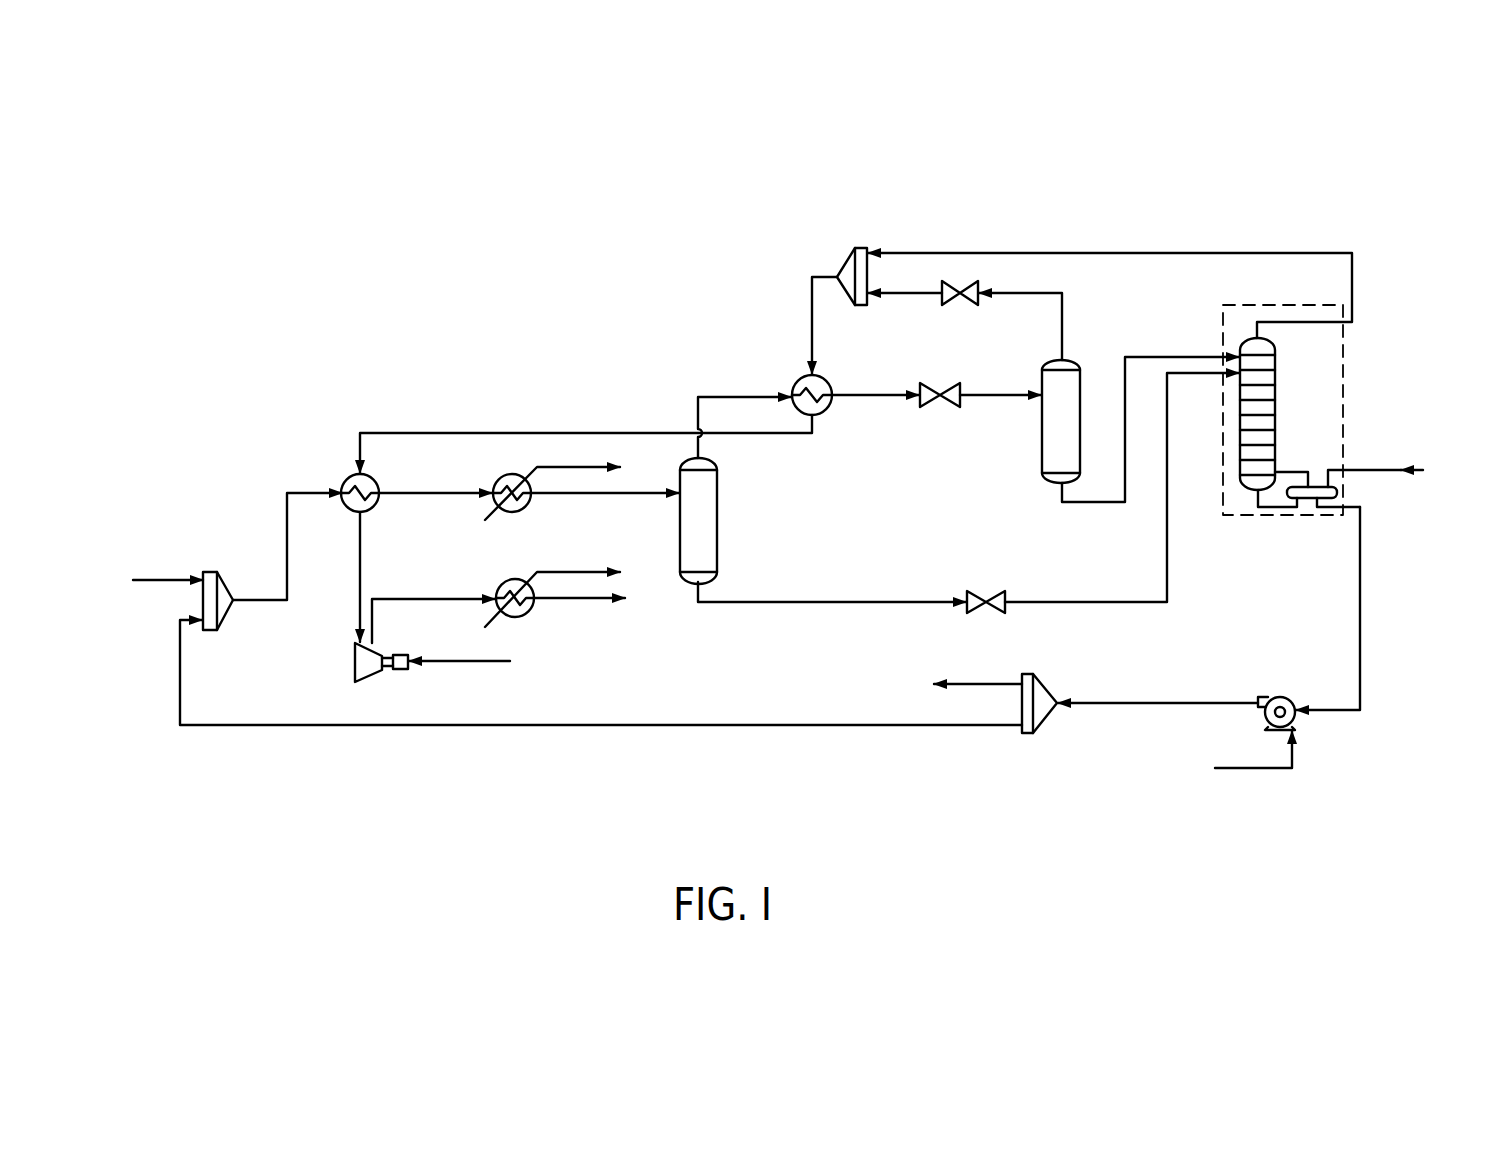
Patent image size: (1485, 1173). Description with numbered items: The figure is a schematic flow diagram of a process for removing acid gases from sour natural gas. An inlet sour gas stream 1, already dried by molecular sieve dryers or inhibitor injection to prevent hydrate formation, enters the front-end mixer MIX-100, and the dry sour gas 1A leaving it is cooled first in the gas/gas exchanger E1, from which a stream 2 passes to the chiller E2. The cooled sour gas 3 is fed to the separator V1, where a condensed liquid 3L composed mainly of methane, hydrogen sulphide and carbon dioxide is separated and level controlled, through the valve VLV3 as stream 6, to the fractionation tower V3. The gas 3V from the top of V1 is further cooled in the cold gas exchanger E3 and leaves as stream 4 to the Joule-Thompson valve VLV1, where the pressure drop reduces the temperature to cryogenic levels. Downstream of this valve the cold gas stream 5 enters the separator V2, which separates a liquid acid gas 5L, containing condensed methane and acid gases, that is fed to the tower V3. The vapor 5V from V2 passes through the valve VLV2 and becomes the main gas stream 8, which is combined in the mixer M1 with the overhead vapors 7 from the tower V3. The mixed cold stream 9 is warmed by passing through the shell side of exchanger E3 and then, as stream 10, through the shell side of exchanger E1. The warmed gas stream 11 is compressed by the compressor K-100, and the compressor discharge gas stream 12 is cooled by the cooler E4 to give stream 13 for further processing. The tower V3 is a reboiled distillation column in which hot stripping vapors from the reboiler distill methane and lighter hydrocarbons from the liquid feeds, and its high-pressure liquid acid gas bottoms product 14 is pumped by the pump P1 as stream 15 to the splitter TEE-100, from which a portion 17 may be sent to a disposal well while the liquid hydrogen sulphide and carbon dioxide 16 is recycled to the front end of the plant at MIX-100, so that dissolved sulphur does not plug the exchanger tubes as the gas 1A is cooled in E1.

The inlet sour gas stream 1 is at (163, 578).
The dry sour gas stream 1A is at (289, 570).
The stream from E1 to E2 2 is at (446, 495).
The cooled sour gas 3 is at (598, 498).
The gas from top of separator V1 3V is at (724, 399).
The condensed liquid 3L is at (860, 605).
The stream from E3 to valve VLV1 4 is at (886, 398).
The cold gas stream 5 is at (1014, 398).
The vapor stream from V2 5V is at (1038, 296).
The liquid acid gas 5L is at (1124, 446).
The liquid stream from VLV3 to column V3 6 is at (1170, 538).
The overhead vapors 7 is at (1150, 255).
The main gas stream 8 is at (912, 296).
The mixed cold stream 9 is at (814, 346).
The stream from E3 to E1 10 is at (784, 434).
The warmed gas stream 11 is at (363, 570).
The compressor discharge gas stream 12 is at (456, 602).
The cooled product stream from E4 13 is at (566, 602).
The liquid acid gas bottoms product 14 is at (1362, 646).
The pumped stream to TEE-100 15 is at (1194, 705).
The liquid hydrogen sulphide/carbon dioxide recycle 16 is at (667, 728).
The product stream from TEE-100 17 is at (980, 686).
The gas/gas exchanger E1 is at (346, 478).
The chiller E2 is at (516, 475).
The cold gas exchanger E3 is at (798, 380).
The cooler E4 is at (512, 582).
The separator V1 is at (717, 548).
The separator V2 is at (1044, 478).
The fractionation tower V3 is at (1248, 492).
The mixer M1 is at (845, 265).
The pump P1 is at (1290, 702).
The Joule-Thompson valve VLV1 is at (945, 400).
The valve VLV2 is at (962, 298).
The valve VLV3 is at (1004, 622).
The inlet gas mixer MIX-100 is at (252, 636).
The compressor K-100 is at (390, 690).
The tee splitter TEE-100 is at (1068, 742).